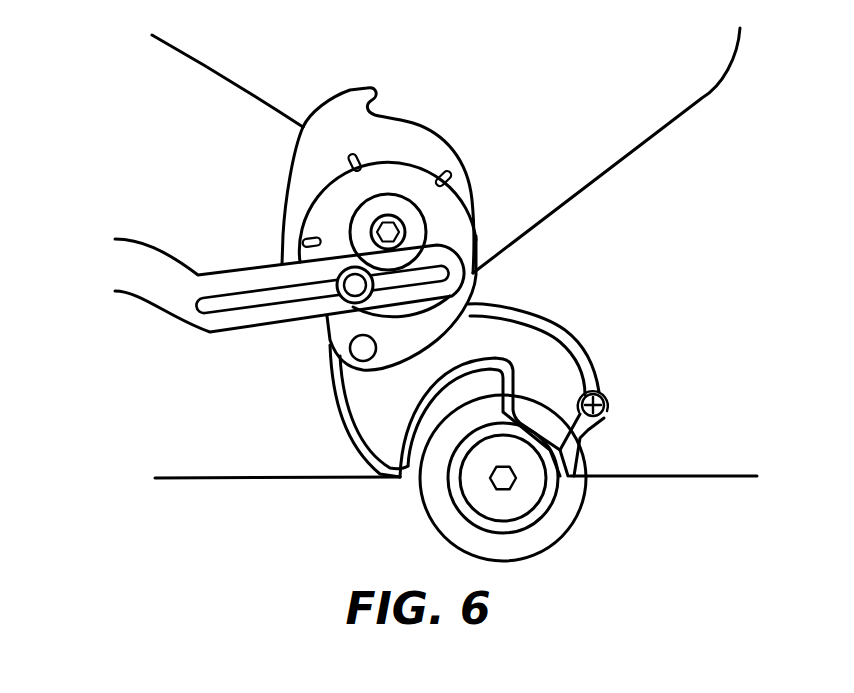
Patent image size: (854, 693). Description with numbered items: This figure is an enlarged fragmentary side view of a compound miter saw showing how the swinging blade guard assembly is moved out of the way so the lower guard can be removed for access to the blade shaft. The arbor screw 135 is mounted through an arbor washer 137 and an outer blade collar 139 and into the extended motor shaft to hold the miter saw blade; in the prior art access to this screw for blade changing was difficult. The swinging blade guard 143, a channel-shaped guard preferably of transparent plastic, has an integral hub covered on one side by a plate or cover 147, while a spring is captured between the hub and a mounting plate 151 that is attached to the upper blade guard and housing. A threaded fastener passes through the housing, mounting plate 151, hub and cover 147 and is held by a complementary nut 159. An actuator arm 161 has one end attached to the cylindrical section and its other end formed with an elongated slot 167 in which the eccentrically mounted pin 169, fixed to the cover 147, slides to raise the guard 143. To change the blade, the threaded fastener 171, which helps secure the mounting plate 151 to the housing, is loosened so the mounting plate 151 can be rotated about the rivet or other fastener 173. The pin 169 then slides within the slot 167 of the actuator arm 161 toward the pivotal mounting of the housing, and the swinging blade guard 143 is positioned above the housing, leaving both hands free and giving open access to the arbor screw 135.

The arbor screw 135 is at (517, 483).
The arbor washer 137 is at (530, 480).
The outer blade collar 139 is at (503, 528).
The swinging blade guard 143 is at (635, 108).
The plate or cover 147 is at (443, 227).
The mounting plate 151 is at (340, 138).
The nut 159 is at (390, 221).
The actuator arm 161 is at (245, 282).
The elongated slot 167 is at (252, 299).
The pin 169 is at (354, 286).
The threaded fastener 171 is at (605, 385).
The rivet or other fastener 173 is at (366, 356).